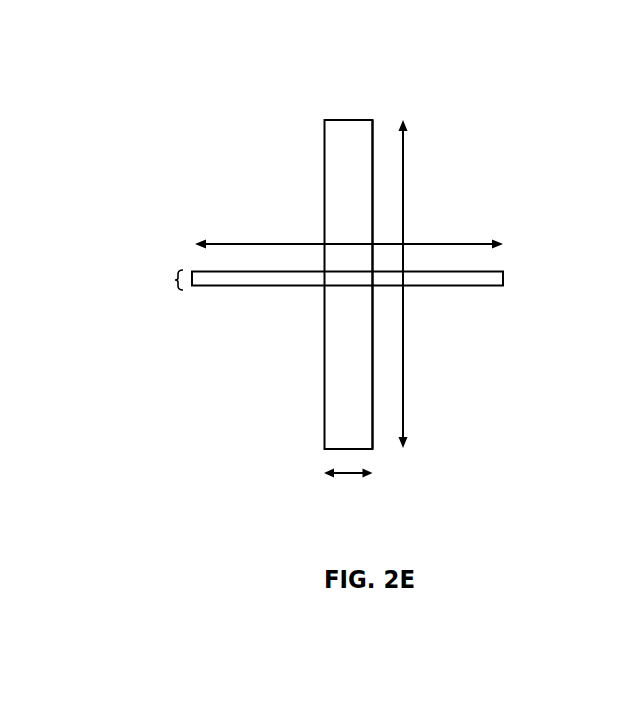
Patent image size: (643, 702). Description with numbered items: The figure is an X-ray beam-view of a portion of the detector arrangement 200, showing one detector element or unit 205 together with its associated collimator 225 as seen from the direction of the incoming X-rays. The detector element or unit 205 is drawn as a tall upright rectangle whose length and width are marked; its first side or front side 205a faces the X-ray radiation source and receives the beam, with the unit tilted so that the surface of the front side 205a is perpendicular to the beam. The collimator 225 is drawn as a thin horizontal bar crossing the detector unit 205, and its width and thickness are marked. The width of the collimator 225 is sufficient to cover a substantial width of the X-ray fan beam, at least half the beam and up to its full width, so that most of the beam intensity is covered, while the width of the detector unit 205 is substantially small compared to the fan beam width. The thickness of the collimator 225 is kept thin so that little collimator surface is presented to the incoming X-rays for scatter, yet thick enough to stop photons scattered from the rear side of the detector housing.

The detector arrangement 200 is at (372, 44).
The detector element or unit 205 is at (333, 423).
The first side or front side 205a is at (358, 341).
The collimator 225 is at (473, 278).